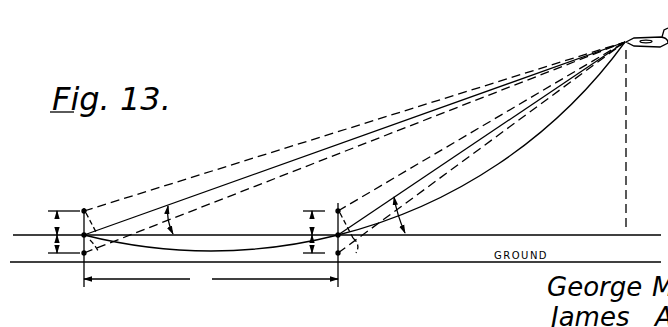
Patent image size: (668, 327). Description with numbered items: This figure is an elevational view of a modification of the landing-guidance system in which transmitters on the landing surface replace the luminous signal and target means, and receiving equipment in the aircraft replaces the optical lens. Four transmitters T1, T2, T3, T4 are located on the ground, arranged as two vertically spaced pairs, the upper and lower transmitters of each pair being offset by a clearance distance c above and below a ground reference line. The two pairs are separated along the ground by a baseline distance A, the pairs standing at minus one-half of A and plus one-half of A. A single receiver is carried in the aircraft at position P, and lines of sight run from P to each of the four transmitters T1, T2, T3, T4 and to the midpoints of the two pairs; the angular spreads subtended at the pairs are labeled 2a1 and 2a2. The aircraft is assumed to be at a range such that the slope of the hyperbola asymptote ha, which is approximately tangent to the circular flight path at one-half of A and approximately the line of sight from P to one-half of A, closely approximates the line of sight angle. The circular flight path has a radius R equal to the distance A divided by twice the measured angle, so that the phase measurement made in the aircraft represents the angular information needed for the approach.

The aircraft position P is at (652, 38).
The first transmitter T1 is at (321, 204).
The second transmitter T2 is at (321, 248).
The third transmitter T3 is at (67, 204).
The fourth transmitter T4 is at (67, 248).
The clearance distance c is at (183, 232).
The transmitter spacing distance A is at (346, 303).
The angular width 2a1 is at (358, 255).
The angular width 2a2 is at (98, 255).
The hyperbola asymptote ha is at (482, 141).
The radius R = A/2θ R is at (543, 128).